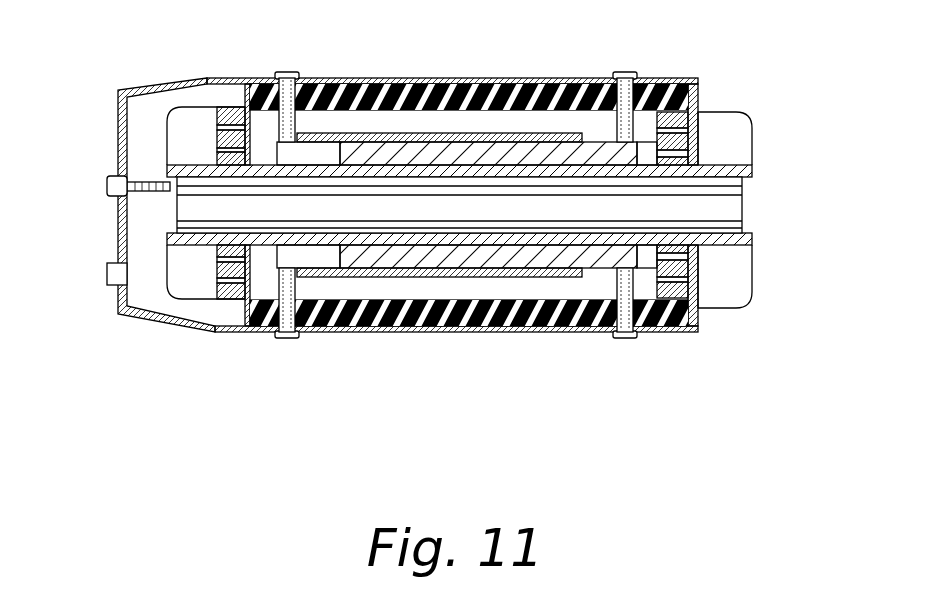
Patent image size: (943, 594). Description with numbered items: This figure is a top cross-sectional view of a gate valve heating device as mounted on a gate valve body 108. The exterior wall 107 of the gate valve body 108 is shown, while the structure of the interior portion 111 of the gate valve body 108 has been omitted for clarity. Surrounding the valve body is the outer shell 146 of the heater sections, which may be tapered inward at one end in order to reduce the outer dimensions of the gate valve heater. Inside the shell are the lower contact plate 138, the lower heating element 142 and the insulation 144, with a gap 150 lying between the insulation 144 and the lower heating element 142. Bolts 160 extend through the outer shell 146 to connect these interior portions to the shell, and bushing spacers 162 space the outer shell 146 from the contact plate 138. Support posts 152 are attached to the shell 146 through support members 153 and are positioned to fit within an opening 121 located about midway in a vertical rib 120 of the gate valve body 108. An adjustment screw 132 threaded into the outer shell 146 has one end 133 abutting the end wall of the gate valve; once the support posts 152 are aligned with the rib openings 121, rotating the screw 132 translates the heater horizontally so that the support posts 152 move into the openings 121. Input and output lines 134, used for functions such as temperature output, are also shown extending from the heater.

The exterior wall 107 is at (752, 237).
The gate valve body 108 is at (750, 183).
The interior portion 111 is at (722, 215).
The vertical rib 120 is at (733, 170).
The opening 121 is at (695, 130).
The adjustment screw 132 is at (107, 186).
The end of adjustment screw 133 is at (167, 180).
The input and output lines 134 is at (107, 273).
The lower contact plate 138 is at (638, 155).
The lower heating element 142 is at (583, 86).
The insulation 144 is at (430, 83).
The outer shell 146 is at (170, 82).
The gap 150 is at (473, 120).
The support post 152 is at (688, 142).
The support member 153 is at (263, 300).
The bolt 160 is at (288, 72).
The bushing spacer 162 is at (312, 79).